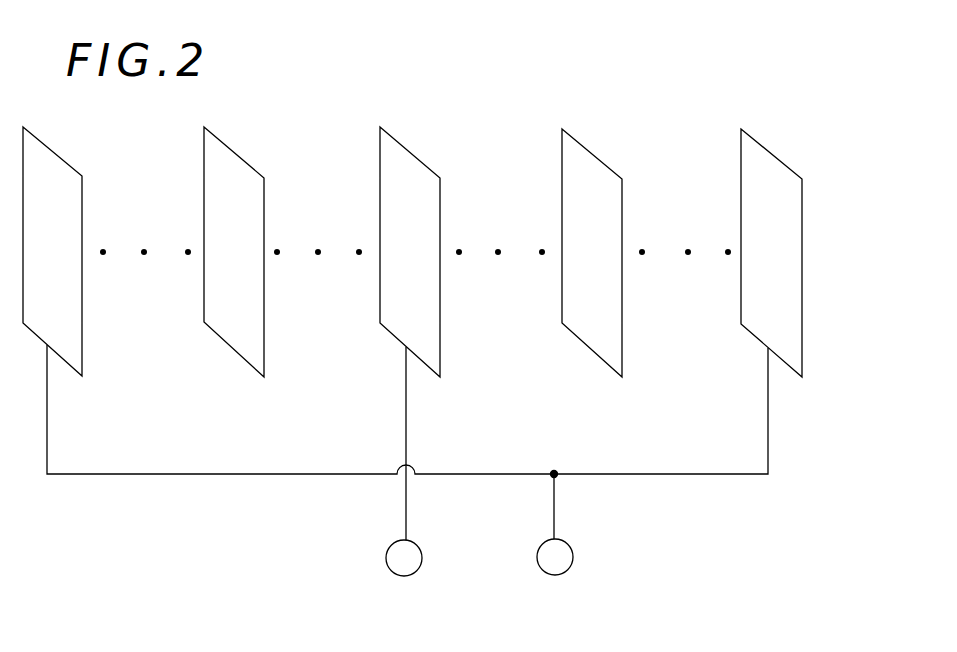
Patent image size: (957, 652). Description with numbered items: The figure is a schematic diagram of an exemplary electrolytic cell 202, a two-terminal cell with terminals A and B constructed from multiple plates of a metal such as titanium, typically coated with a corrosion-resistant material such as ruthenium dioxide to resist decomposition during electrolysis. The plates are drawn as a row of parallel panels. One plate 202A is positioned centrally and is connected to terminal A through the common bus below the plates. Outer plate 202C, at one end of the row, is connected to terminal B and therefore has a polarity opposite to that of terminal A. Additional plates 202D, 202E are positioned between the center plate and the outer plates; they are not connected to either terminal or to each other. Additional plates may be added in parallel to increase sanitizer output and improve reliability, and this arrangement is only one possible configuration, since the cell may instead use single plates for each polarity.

The electrolytic cell 202 is at (265, 435).
The center plate 202A is at (411, 168).
The outer plate 202C is at (40, 167).
The additional plate 202D is at (594, 169).
The additional plate 202E is at (231, 168).